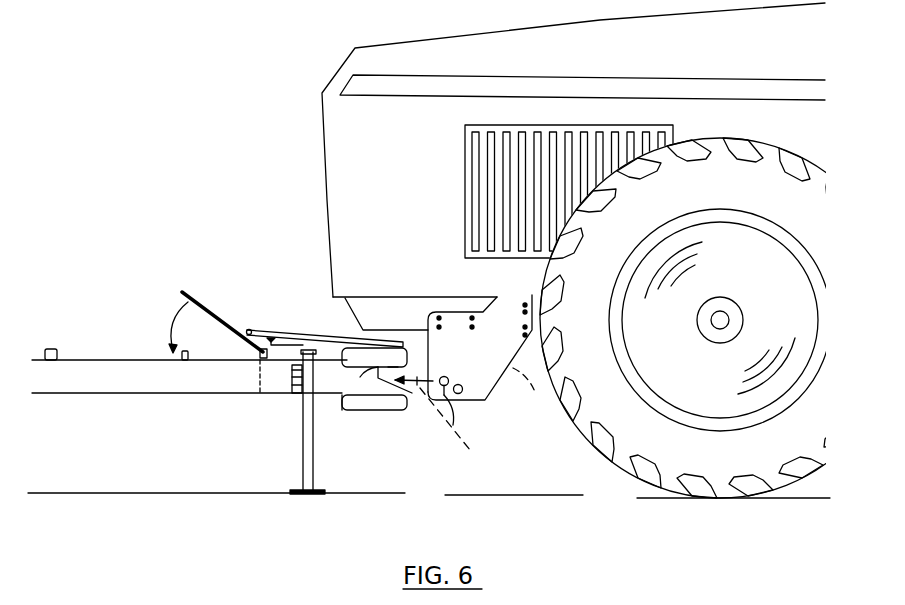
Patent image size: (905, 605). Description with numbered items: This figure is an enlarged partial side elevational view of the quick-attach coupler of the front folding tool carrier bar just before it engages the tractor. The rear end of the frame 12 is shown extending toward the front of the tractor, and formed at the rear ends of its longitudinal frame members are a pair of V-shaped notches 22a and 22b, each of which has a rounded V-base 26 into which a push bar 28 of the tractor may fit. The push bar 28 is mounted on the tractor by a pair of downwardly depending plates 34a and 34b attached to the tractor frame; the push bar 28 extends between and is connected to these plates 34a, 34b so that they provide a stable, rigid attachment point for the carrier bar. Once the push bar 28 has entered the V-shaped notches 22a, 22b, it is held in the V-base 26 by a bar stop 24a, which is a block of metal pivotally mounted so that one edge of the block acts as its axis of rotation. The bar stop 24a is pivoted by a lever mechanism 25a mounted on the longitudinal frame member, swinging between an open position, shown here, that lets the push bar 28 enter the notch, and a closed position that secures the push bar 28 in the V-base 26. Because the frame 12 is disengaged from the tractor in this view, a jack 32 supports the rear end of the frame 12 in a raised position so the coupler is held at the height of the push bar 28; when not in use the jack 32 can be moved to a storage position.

The frame 12 is at (100, 400).
The V-shaped notch 22a is at (418, 378).
The V-shaped notch 22b is at (410, 390).
The bar stop 24a is at (340, 400).
The lever mechanism 25a is at (253, 330).
The V-base 26 is at (370, 375).
The push bar 28 is at (470, 450).
The jack 32 is at (335, 394).
The downwardly depending plate 34a is at (493, 377).
The downwardly depending plate 34b is at (535, 392).